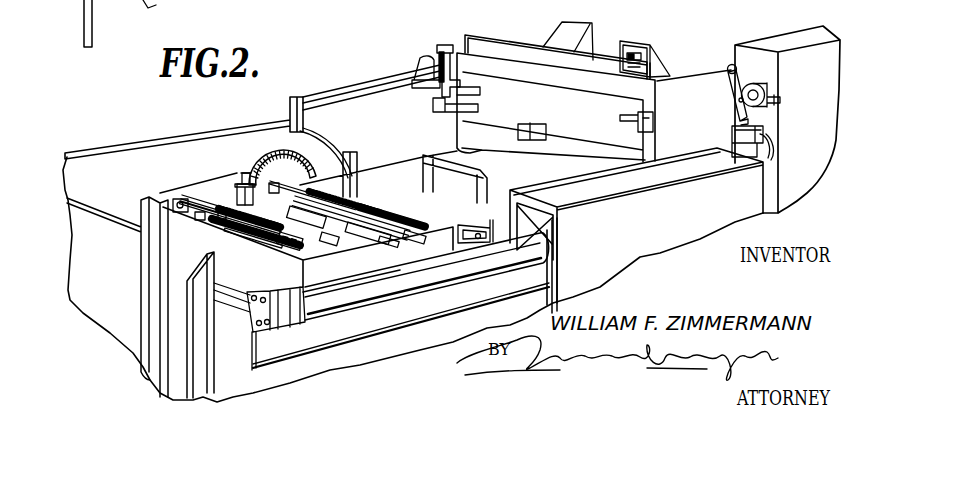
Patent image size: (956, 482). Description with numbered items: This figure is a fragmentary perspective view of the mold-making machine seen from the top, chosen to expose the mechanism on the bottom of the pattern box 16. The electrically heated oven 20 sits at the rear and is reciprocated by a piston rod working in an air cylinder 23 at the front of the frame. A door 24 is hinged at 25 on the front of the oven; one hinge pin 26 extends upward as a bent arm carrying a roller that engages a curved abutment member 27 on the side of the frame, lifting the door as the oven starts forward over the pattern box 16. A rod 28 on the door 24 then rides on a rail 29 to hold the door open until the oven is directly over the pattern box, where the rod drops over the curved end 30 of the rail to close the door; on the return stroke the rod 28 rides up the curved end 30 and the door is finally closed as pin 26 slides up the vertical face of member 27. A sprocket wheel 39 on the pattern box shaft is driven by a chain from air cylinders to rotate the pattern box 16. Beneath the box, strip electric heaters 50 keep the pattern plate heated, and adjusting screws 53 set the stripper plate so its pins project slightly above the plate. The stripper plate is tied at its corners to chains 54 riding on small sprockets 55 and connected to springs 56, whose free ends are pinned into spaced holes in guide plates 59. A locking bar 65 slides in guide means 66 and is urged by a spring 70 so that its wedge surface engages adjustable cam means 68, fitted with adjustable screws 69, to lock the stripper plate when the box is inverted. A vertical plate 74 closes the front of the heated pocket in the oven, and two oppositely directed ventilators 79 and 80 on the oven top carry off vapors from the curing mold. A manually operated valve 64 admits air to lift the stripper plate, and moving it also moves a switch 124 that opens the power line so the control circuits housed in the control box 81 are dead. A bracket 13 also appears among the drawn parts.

The bracket 13 is at (479, 227).
The pattern box 16 is at (441, 227).
The electrically heated oven 20 is at (690, 60).
The air cylinder 23 is at (495, 277).
The door 24 is at (626, 123).
The hinge 25 is at (655, 121).
The hinge pin 26 is at (446, 46).
The curved abutment member 27 is at (418, 73).
The rod 28 is at (433, 108).
The rail 29 is at (362, 105).
The curved end 30 is at (290, 118).
The sprocket wheel 39 is at (265, 161).
The strip electric heaters 50 is at (273, 183).
The adjusting screws 53 is at (421, 242).
The chains 54 is at (221, 221).
The small sprockets 55 is at (196, 220).
The springs 56 is at (249, 232).
The guide plates 59 is at (313, 170).
The manually operated valve 64 is at (767, 88).
The locking bar 65 is at (395, 243).
The guide means 66 is at (380, 242).
The adjustable cam means 68 is at (236, 188).
The adjustable screws 69 is at (244, 174).
The spring 70 is at (240, 236).
The vertical plate 74 is at (497, 48).
The ventilator 79 is at (653, 55).
The ventilator 80 is at (587, 28).
The control box 81 is at (779, 41).
The switch 124 is at (767, 134).